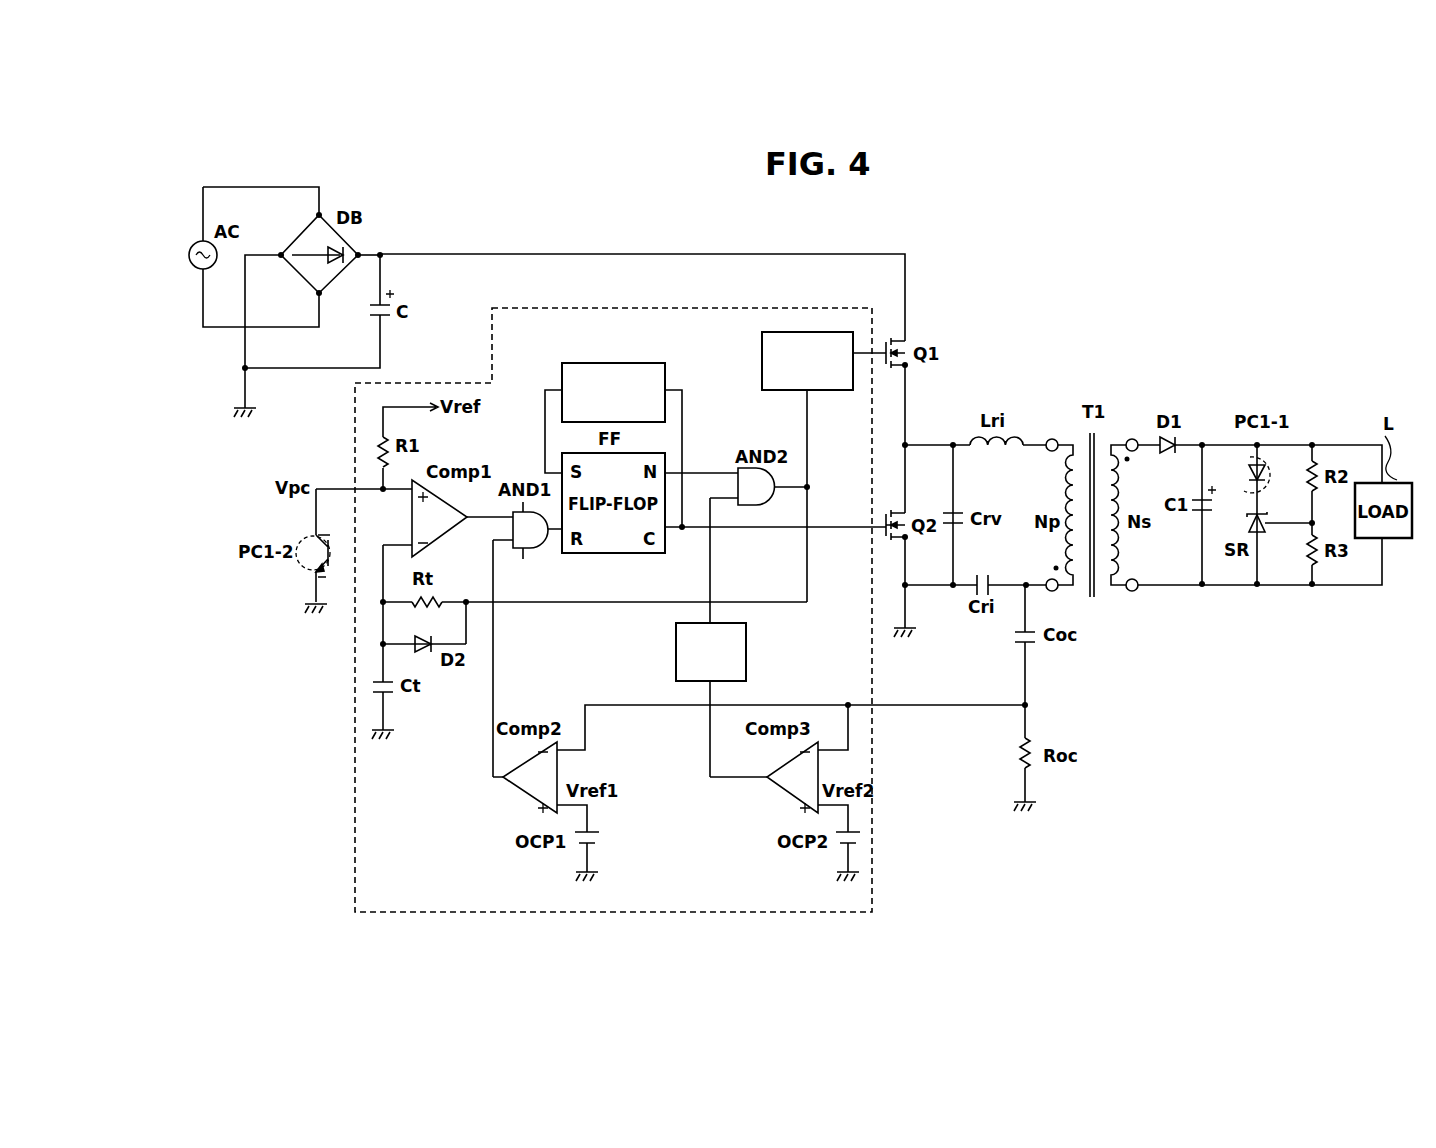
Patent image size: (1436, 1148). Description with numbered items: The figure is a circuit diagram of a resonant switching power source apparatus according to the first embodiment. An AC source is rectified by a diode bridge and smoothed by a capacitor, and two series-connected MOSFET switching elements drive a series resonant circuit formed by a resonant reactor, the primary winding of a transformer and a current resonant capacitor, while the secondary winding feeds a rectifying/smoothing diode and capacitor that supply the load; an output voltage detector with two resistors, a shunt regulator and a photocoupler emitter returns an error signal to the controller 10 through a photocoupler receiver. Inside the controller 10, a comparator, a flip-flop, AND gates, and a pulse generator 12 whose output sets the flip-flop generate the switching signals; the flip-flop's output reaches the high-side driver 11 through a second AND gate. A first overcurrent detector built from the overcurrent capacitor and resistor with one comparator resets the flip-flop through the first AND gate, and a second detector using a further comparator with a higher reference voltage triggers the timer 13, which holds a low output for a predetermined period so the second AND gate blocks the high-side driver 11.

The controller 10 is at (508, 308).
The high-side driver 11 is at (762, 363).
The pulse generator 12 is at (632, 362).
The timer 13 is at (747, 650).